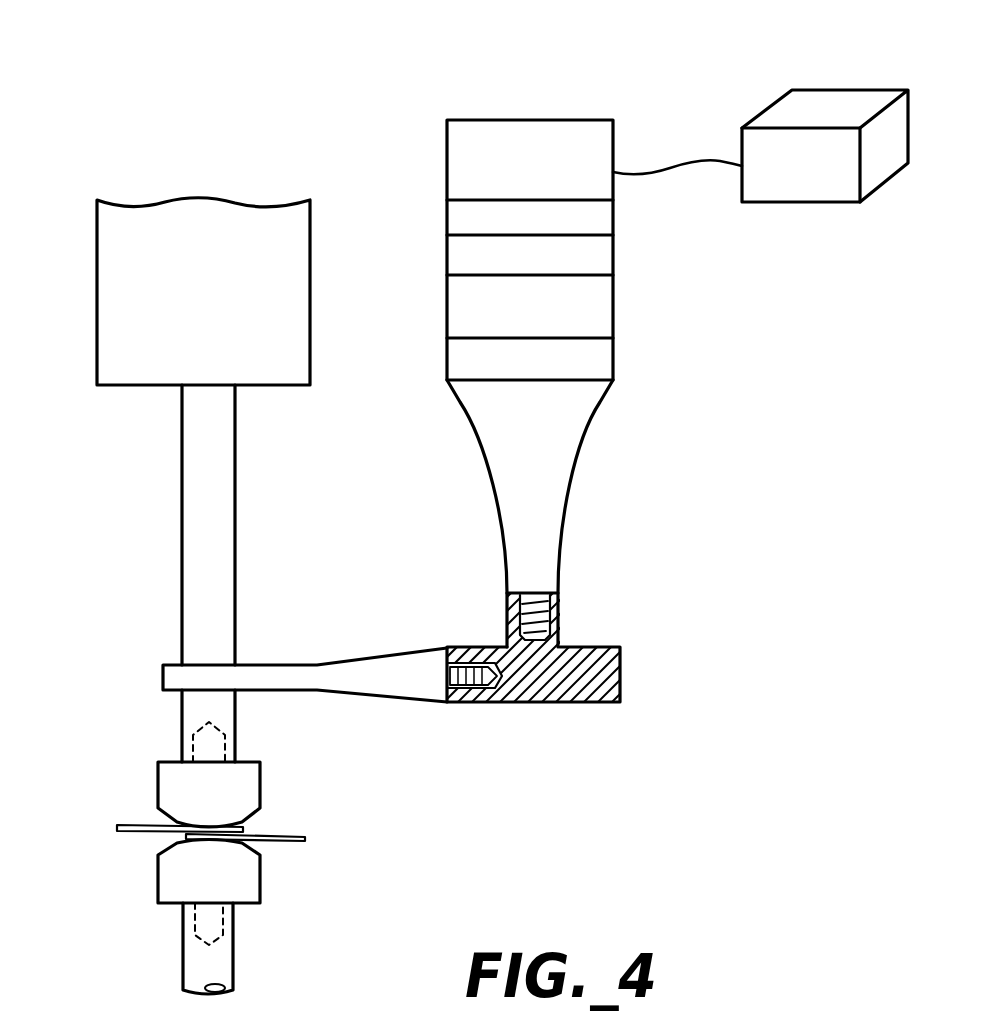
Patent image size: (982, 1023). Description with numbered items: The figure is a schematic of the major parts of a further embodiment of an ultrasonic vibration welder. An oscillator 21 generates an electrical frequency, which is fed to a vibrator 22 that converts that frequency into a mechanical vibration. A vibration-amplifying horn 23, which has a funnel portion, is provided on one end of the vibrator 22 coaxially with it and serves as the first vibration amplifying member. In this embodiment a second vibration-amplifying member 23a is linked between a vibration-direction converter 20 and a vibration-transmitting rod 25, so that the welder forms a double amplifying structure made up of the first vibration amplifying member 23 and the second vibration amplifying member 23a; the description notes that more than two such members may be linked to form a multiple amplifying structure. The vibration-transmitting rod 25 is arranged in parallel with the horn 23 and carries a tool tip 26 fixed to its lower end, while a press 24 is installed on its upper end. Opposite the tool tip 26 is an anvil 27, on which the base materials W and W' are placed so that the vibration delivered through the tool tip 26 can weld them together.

The vibration-direction converter 20 is at (586, 700).
The oscillator 21 is at (853, 97).
The vibrator 22 is at (550, 142).
The vibration-amplifying horn 23 is at (574, 437).
The vibration-amplifying member 23a is at (386, 688).
The press 24 is at (212, 208).
The vibration-transmitting rod 25 is at (188, 494).
The tool tip 26 is at (162, 790).
The anvil 27 is at (162, 872).
The base material W is at (137, 843).
The base material W' is at (282, 812).